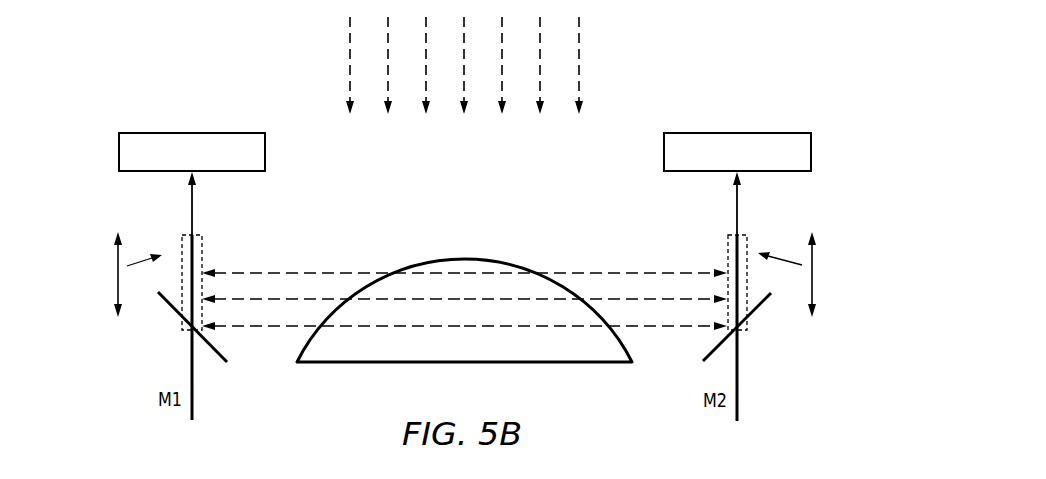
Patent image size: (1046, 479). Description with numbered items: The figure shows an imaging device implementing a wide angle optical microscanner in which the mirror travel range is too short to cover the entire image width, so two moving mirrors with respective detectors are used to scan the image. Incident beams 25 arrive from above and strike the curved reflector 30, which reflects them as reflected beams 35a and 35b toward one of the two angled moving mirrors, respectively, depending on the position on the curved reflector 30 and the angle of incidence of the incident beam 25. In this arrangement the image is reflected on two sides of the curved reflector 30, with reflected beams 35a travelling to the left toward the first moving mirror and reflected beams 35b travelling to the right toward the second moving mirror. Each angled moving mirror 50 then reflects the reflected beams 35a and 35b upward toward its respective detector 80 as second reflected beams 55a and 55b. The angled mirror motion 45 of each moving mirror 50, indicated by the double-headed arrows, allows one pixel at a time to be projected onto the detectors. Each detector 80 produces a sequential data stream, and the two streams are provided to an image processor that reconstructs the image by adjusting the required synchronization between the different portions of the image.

The incident beams 25 is at (350, 43).
The detector 80 is at (181, 133).
The moving mirror 50 is at (173, 309).
The angled mirror motion 45 is at (118, 277).
The second reflected beam 55a is at (196, 250).
The second reflected beam 55b is at (735, 250).
The reflected beam 35a is at (322, 272).
The reflected beam 35b is at (605, 272).
The curved reflector 30 is at (360, 364).